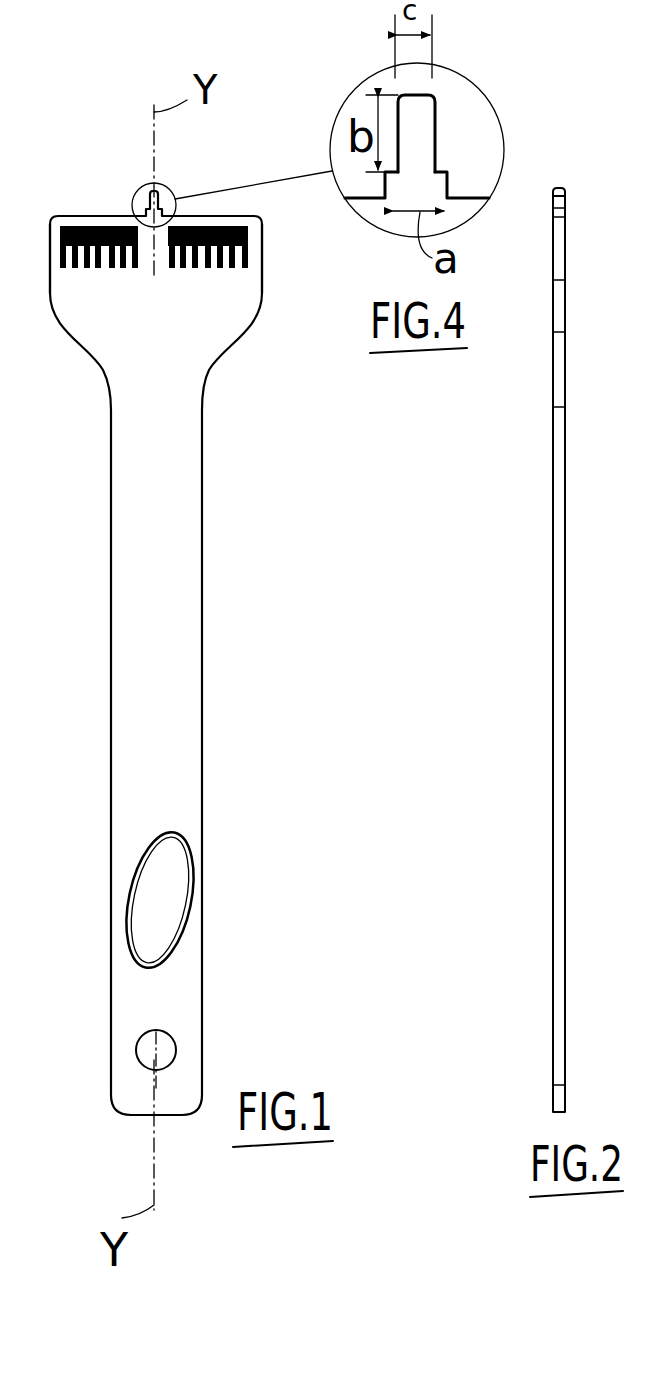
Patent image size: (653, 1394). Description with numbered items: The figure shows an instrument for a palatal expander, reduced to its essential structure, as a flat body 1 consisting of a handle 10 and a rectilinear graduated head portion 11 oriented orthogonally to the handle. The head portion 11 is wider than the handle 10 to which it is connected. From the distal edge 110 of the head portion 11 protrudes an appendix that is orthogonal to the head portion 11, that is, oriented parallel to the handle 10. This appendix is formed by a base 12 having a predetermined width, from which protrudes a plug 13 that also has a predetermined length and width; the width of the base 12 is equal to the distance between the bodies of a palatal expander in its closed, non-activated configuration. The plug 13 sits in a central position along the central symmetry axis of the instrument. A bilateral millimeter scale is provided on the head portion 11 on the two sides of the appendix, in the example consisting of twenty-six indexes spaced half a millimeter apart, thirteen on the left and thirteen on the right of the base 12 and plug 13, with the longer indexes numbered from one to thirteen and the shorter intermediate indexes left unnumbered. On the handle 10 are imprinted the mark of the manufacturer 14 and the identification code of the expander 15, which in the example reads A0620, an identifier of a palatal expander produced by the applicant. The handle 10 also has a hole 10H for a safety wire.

In FIG. 1, the flat body 1 is at (245, 641).
In FIG. 2, the flat body 1 is at (533, 507).
In FIG. 1, the handle 10 is at (197, 789).
In FIG. 2, the handle 10 is at (557, 617).
In FIG. 1, the hole 10H is at (177, 1050).
In FIG. 1, the head portion 11 is at (257, 297).
In FIG. 1, the distal edge 110 is at (73, 216).
In FIG. 4, the base 12 is at (436, 187).
In FIG. 4, the plug 13 is at (428, 117).
In FIG. 2, the plug 13 is at (560, 186).
In FIG. 1, the mark of the manufacturer 14 is at (138, 964).
In FIG. 1, the identification code of the expander 15 is at (125, 681).